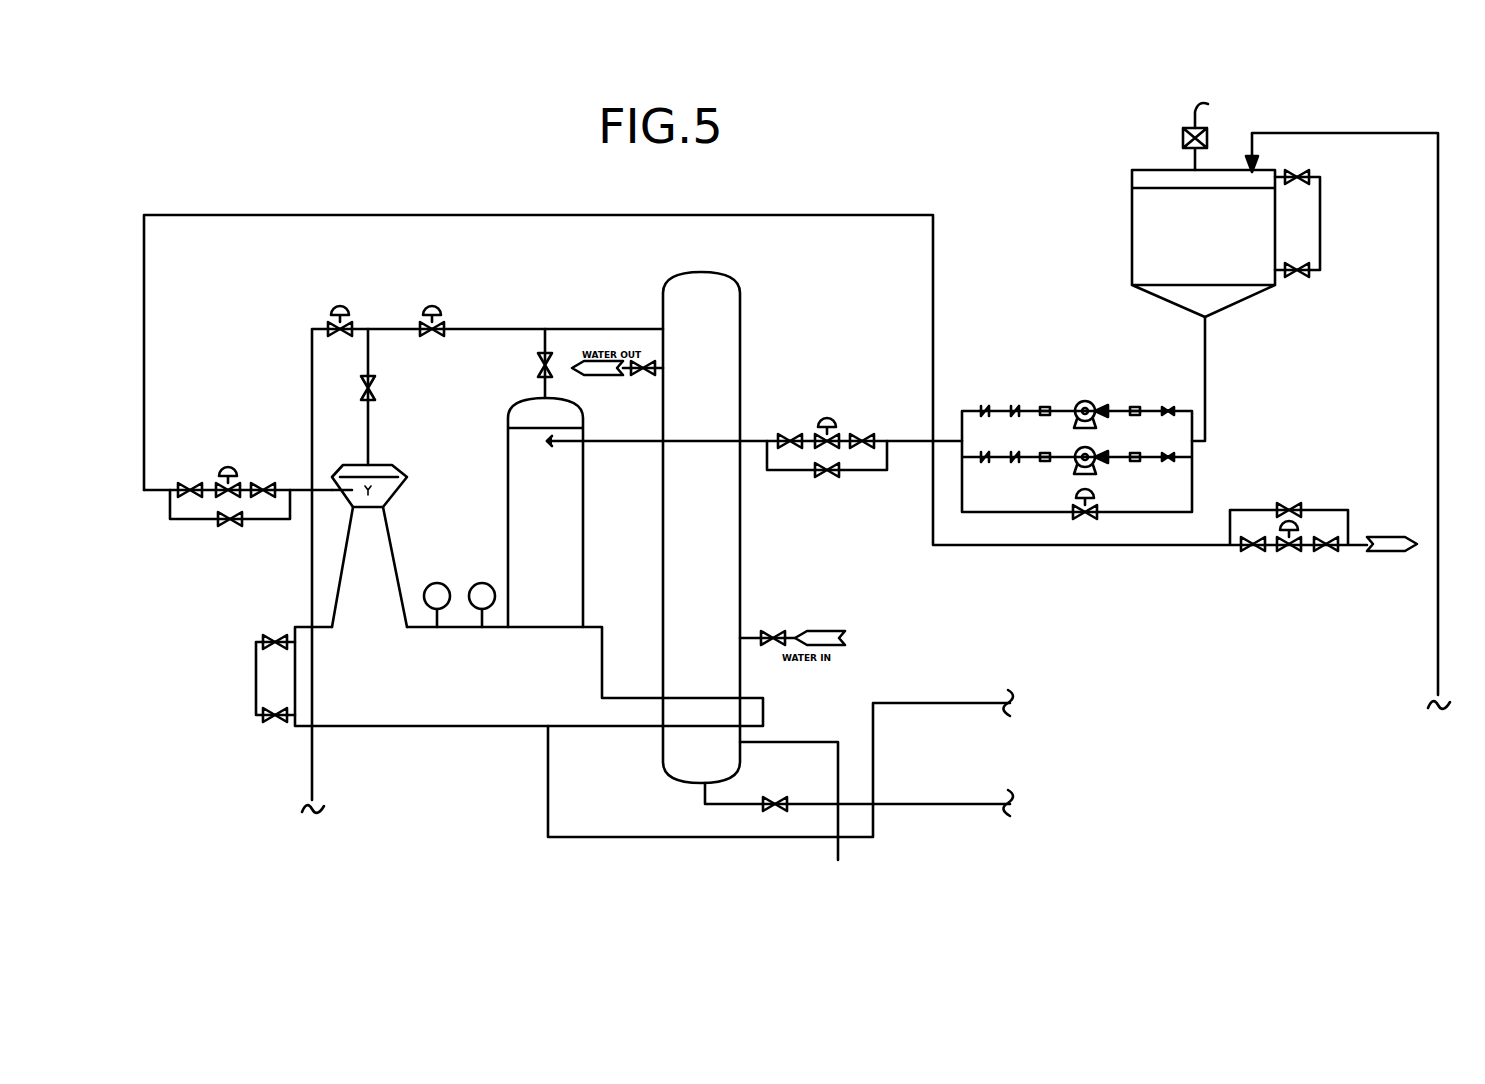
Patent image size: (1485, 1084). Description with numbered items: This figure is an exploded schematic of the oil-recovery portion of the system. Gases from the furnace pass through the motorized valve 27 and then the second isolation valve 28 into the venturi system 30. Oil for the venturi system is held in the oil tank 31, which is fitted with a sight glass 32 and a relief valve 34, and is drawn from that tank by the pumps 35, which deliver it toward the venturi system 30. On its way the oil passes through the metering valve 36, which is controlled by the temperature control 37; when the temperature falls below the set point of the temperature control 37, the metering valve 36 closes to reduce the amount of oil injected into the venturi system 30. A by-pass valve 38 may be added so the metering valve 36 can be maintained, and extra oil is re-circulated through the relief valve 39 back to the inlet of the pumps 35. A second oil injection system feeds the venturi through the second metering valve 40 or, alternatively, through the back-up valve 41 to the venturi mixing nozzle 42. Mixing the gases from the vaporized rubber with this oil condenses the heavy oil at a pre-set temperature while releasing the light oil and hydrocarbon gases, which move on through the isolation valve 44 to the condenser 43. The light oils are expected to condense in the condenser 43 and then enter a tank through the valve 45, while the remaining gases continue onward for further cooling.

The motorized valve 27 is at (334, 308).
The second isolation valve 28 is at (372, 380).
The venturi system 30 is at (393, 543).
The oil tank 31 is at (1132, 237).
The sight glass 32 is at (463, 727).
The relief valve 34 is at (1193, 123).
The pumps 35 is at (1087, 405).
The metering valve 36 is at (827, 417).
The temperature control 37 is at (438, 582).
The by-pass valve 38 is at (832, 477).
The relief valve 39 is at (1097, 515).
The second metering valve 40 is at (230, 467).
The back-up valve 41 is at (228, 530).
The venturi mixing nozzle 42 is at (388, 484).
The condenser 43 is at (740, 552).
The isolation valve 44 is at (550, 357).
The valve 45 is at (782, 810).